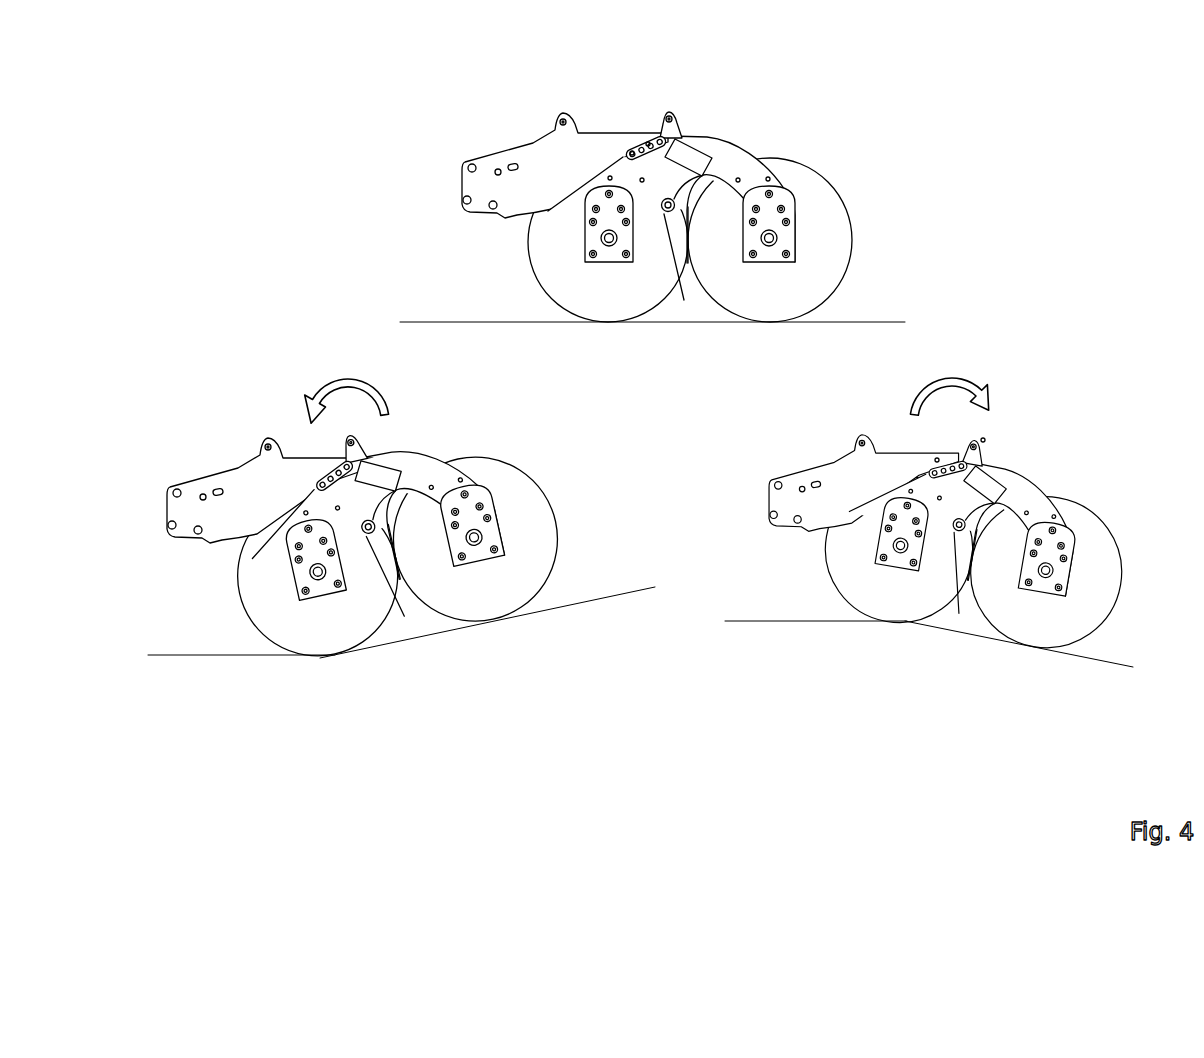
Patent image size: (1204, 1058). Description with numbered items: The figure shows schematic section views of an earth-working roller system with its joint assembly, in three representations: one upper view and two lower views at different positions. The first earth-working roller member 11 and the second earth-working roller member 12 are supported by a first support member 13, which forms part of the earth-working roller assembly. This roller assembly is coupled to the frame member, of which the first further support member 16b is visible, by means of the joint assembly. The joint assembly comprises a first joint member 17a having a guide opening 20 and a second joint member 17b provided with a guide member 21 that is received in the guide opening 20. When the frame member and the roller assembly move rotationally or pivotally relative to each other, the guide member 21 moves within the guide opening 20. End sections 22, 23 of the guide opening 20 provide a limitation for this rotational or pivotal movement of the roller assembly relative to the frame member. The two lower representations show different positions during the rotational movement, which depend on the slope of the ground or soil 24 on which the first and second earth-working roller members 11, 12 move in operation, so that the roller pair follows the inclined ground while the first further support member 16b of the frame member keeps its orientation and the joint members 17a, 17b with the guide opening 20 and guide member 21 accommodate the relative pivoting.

The first earth-working roller member 11 is at (543, 272).
The second earth-working roller member 12 is at (817, 187).
The first support member 13 is at (728, 143).
The first further support member 16b is at (488, 167).
The first joint member 17a is at (673, 110).
The second joint member 17b is at (633, 147).
The guide opening 20 is at (633, 152).
The guide member 21 is at (648, 145).
The end section of the guide opening 22 is at (937, 460).
The end section of the guide opening 23 is at (983, 440).
The ground or soil 24 is at (588, 603).